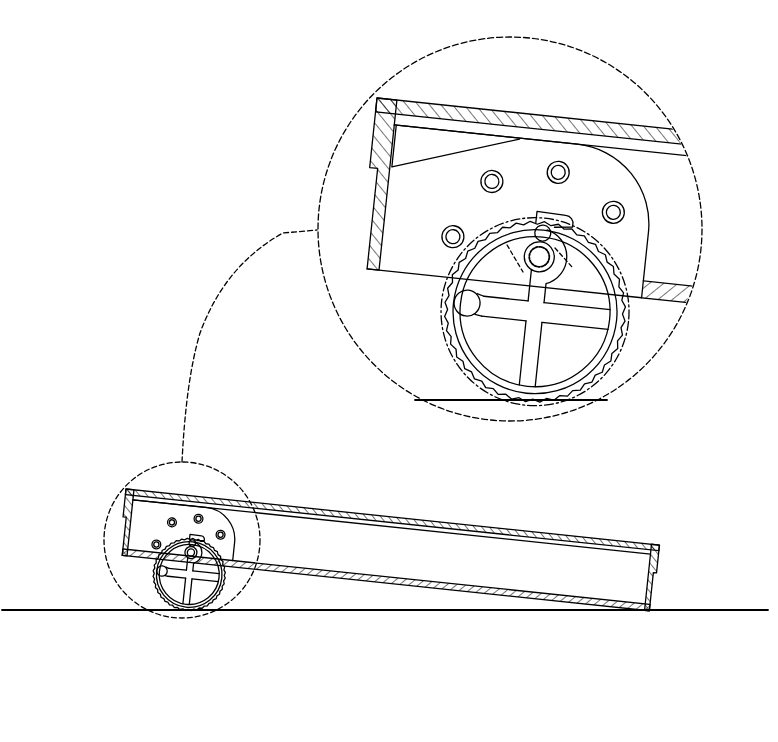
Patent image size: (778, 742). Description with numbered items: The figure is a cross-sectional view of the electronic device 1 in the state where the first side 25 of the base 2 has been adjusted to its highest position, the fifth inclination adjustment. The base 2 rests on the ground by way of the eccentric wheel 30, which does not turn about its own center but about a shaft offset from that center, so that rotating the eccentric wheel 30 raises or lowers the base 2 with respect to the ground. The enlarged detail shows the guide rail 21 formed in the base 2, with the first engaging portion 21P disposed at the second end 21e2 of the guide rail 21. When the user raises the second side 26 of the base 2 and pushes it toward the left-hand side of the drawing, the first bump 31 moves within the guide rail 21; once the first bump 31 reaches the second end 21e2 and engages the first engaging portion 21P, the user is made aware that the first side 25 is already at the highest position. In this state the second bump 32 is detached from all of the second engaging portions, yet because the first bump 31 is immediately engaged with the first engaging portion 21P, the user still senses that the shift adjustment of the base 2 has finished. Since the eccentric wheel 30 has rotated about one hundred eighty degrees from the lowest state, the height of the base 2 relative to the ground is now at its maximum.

The electronic device 1 is at (38, 246).
The base 2 is at (288, 500).
The guide rail 21 is at (556, 264).
The second end of the guide rail 21e2 is at (523, 238).
The first engaging portion 21P is at (555, 212).
The first side of the base 25 is at (119, 526).
The second side of the base 26 is at (665, 579).
The eccentric wheel 30 is at (606, 357).
The first bump 31 is at (551, 233).
The second bump 32 is at (462, 304).